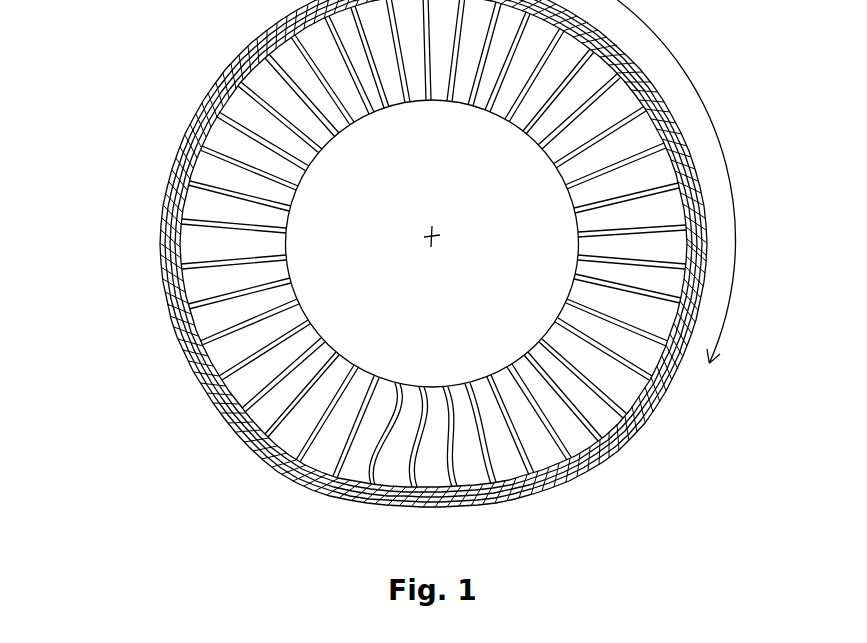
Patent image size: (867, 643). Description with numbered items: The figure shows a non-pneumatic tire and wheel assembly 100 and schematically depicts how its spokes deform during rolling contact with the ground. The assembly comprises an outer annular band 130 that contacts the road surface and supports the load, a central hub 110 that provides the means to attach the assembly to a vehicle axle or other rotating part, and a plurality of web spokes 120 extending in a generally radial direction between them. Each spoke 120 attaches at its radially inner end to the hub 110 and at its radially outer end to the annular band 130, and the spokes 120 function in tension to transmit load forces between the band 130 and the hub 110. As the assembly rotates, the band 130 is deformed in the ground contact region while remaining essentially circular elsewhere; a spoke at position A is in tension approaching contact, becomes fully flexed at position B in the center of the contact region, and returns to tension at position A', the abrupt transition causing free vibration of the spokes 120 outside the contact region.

The non-pneumatic tire and wheel assembly 100 is at (206, 43).
The hub 110 is at (303, 313).
The web spokes 120 is at (207, 200).
The outer annular band 130 is at (162, 298).